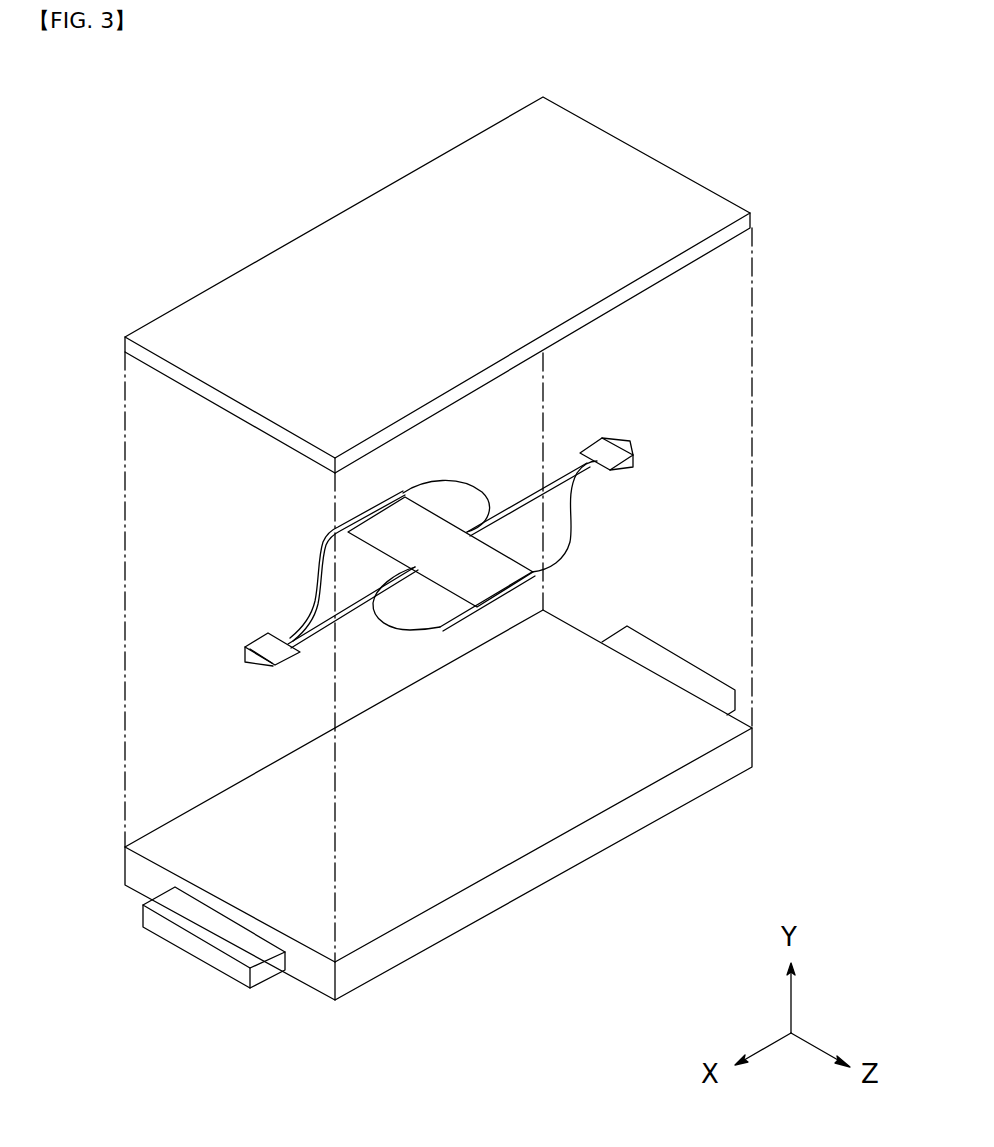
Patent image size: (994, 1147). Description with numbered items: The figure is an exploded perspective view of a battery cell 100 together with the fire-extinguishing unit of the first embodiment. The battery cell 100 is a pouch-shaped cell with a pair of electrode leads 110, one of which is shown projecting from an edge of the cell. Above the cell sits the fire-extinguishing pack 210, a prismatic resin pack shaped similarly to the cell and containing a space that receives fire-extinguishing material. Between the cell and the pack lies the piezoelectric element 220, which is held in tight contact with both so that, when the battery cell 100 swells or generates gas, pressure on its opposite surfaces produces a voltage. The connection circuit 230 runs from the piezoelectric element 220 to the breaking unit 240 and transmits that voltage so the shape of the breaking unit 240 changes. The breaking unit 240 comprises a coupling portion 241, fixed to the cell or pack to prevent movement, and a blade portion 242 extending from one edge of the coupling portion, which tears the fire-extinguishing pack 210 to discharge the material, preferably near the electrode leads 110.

The battery cell 100 is at (553, 867).
The electrode lead 110 is at (145, 918).
The fire-extinguishing pack 210 is at (285, 262).
The piezoelectric element 220 is at (370, 537).
The connection circuit 230 is at (305, 605).
The breaking unit 240 is at (587, 515).
The coupling portion 241 is at (633, 467).
The blade portion 242 is at (633, 443).